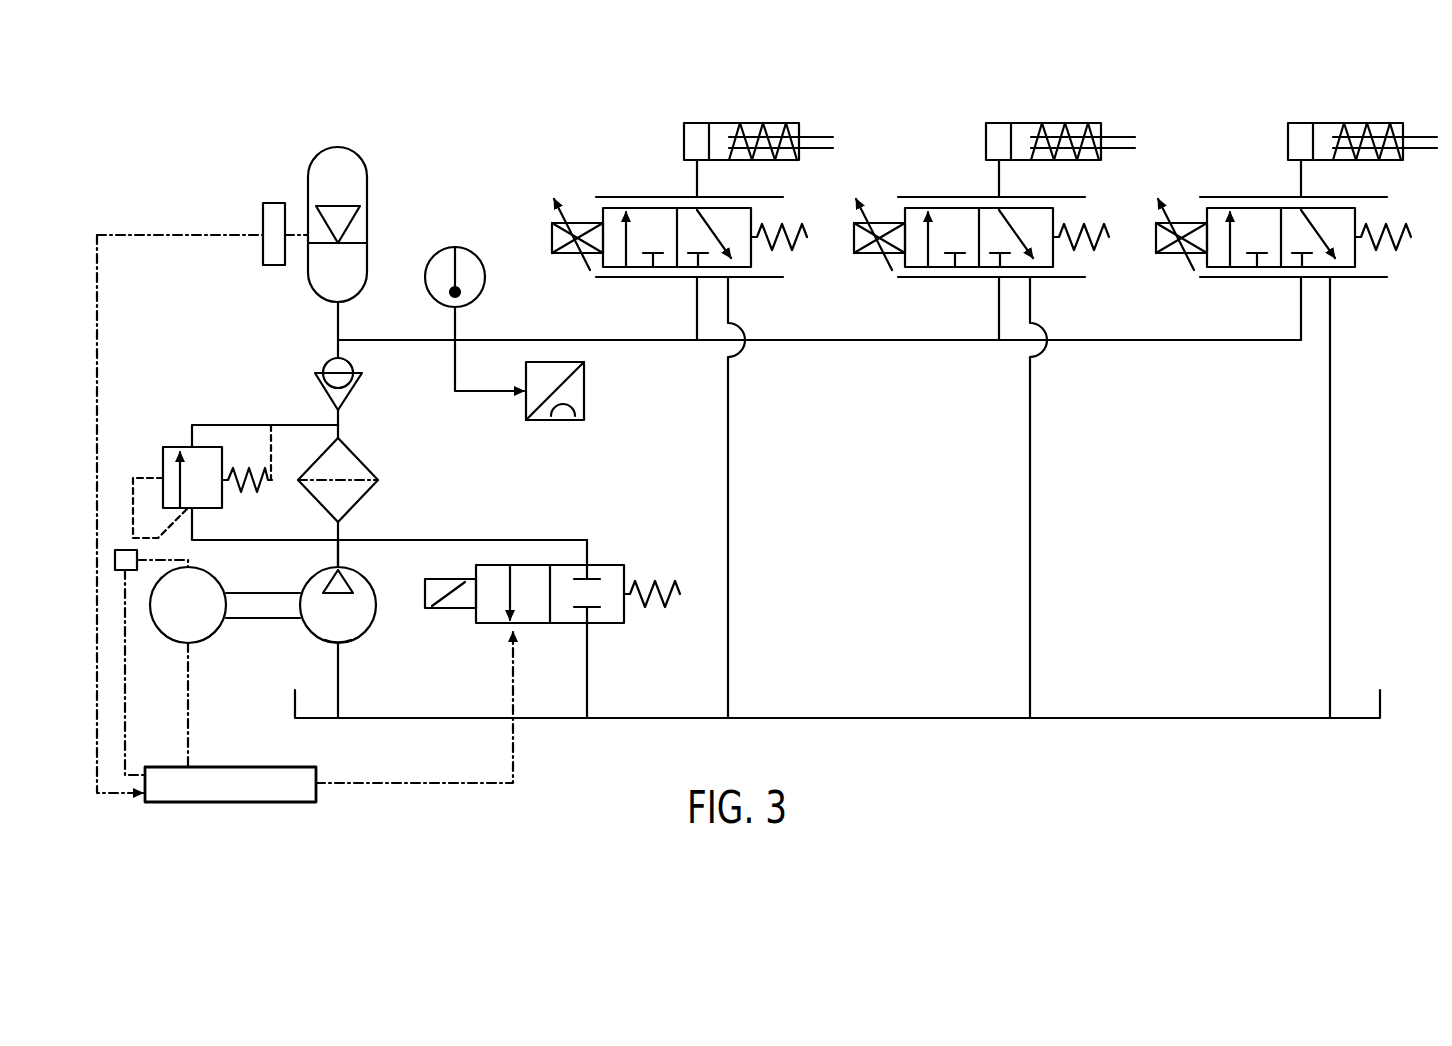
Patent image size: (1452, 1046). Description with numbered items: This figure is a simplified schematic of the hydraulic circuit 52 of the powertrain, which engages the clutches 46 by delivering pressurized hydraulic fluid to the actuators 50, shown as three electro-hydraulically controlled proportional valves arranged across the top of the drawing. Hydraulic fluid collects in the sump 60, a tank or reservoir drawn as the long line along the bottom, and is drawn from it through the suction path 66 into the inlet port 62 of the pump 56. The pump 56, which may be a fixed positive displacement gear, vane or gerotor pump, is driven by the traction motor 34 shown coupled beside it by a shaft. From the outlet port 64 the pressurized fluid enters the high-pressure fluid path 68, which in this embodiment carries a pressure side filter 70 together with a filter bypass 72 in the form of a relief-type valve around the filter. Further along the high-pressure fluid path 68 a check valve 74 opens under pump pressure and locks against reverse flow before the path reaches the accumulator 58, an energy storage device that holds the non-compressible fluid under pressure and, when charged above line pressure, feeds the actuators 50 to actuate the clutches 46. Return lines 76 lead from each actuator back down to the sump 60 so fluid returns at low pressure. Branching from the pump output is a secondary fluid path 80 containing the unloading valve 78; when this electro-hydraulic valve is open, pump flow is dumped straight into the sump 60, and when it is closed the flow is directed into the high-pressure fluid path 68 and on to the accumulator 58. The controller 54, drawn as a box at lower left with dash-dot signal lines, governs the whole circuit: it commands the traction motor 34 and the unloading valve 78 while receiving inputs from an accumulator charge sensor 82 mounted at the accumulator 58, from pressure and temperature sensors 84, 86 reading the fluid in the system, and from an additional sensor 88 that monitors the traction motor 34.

The traction motor 34 is at (162, 633).
The clutches 46 is at (741, 125).
The actuators 50 is at (646, 180).
The hydraulic circuit 52 is at (549, 102).
The controller 54 is at (273, 803).
The pump 56 is at (365, 635).
The accumulator 58 is at (357, 157).
The sump 60 is at (1145, 747).
The inlet port 62 is at (324, 648).
The outlet port 64 is at (350, 553).
The suction path 66 is at (341, 680).
The high-pressure fluid path 68 is at (390, 340).
The pressure side filter 70 is at (362, 458).
The filter bypass 72 is at (158, 446).
The check valve 74 is at (325, 362).
The return lines 76 is at (729, 497).
The unloading valve 78 is at (605, 551).
The secondary fluid path 80 is at (487, 540).
The accumulator charge sensor 82 is at (274, 203).
The pressure sensor 84 is at (585, 391).
The temperature sensor 86 is at (433, 257).
The additional sensor 88 is at (118, 548).